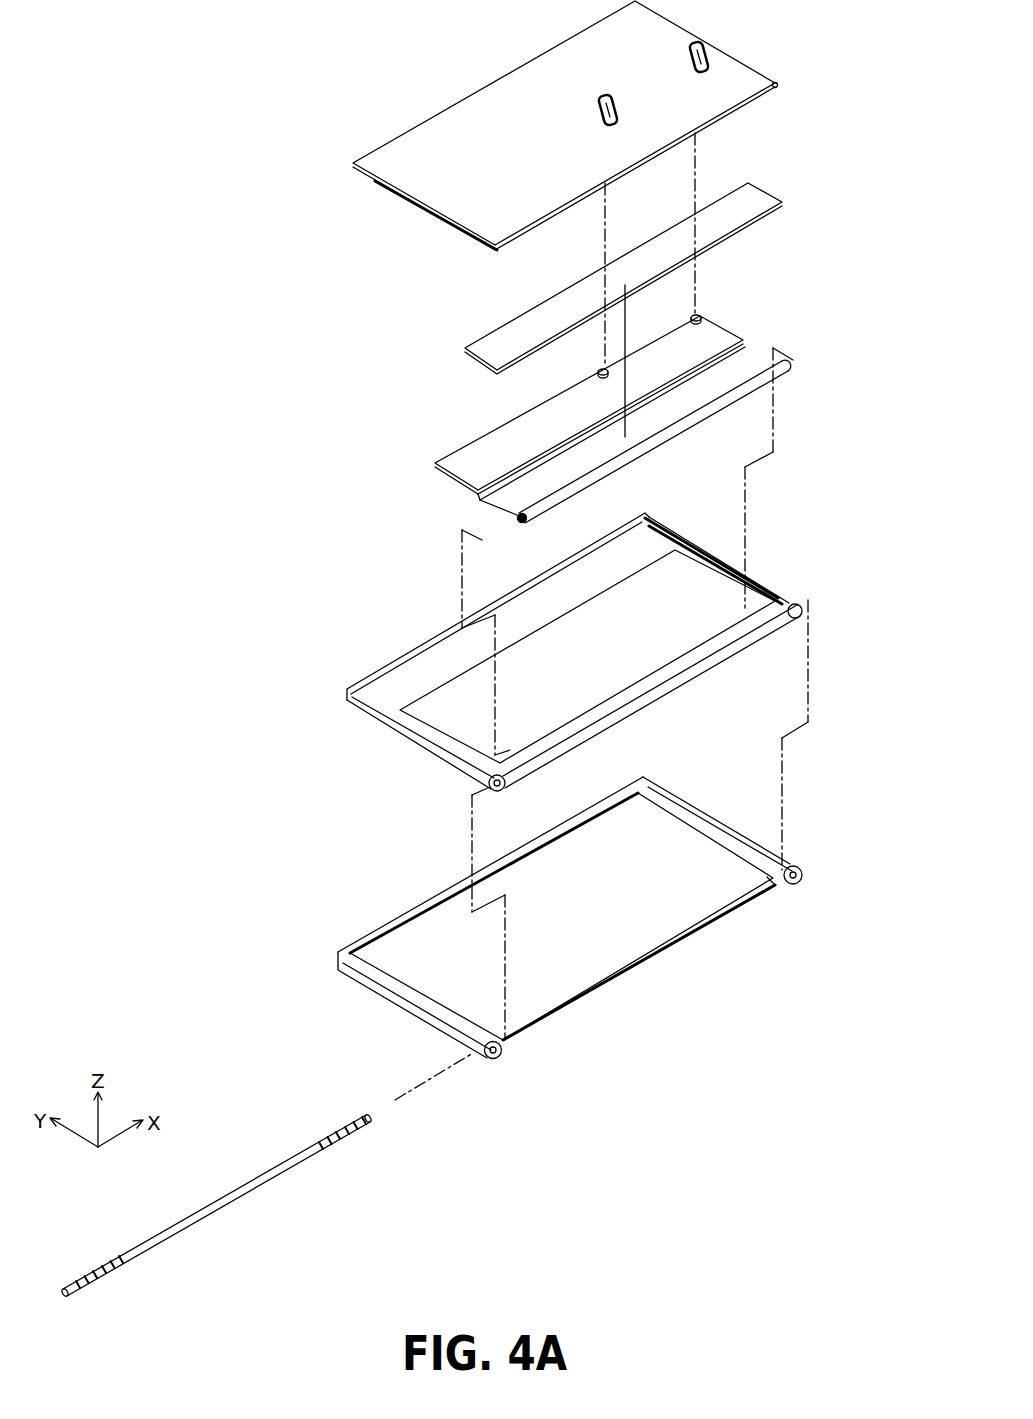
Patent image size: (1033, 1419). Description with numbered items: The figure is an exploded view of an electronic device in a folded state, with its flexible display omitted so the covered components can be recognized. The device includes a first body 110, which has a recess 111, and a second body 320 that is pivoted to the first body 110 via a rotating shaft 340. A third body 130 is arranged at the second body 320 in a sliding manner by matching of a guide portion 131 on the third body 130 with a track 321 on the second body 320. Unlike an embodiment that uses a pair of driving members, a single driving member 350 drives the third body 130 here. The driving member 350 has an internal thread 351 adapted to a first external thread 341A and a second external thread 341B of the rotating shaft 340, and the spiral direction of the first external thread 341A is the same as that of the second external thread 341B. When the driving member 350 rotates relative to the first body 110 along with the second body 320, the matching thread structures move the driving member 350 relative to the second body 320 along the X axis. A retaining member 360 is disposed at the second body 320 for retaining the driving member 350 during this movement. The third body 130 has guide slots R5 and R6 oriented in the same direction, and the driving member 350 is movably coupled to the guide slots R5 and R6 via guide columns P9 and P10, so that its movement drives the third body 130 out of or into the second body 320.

The third body 130 is at (430, 128).
The guide portion 131 is at (430, 217).
The guide slot R5 is at (702, 54).
The guide slot R6 is at (612, 104).
The retaining member 360 is at (490, 338).
The guide column P9 is at (698, 315).
The guide column P10 is at (598, 373).
The driving member 350 is at (432, 465).
The internal thread 351 is at (522, 525).
The second body 320 is at (360, 703).
The track 321 is at (712, 567).
The first body 110 is at (358, 973).
The recess 111 is at (422, 936).
The rotating shaft 340 is at (217, 1203).
The first external thread 341A is at (335, 1119).
The second external thread 341B is at (90, 1270).